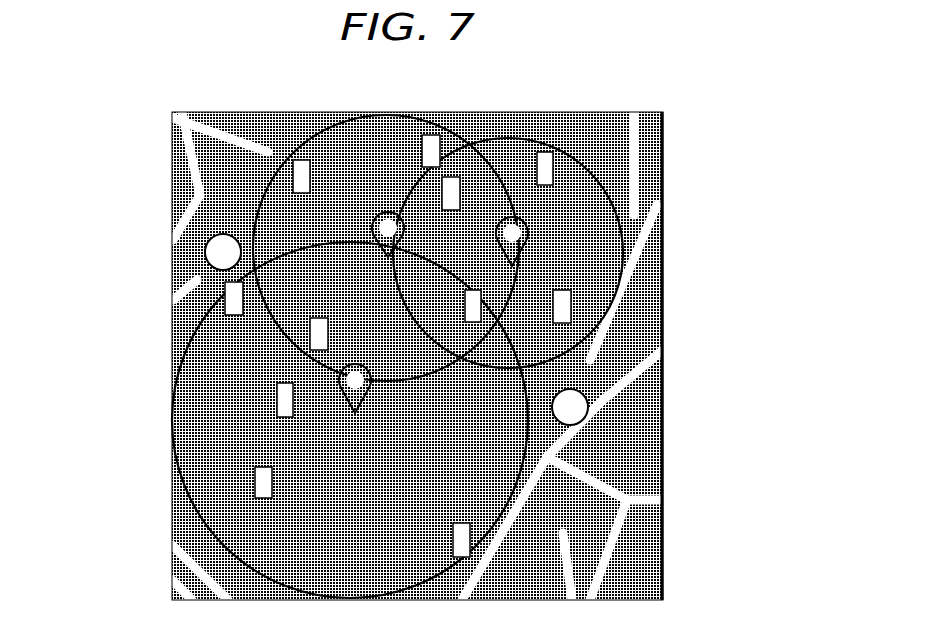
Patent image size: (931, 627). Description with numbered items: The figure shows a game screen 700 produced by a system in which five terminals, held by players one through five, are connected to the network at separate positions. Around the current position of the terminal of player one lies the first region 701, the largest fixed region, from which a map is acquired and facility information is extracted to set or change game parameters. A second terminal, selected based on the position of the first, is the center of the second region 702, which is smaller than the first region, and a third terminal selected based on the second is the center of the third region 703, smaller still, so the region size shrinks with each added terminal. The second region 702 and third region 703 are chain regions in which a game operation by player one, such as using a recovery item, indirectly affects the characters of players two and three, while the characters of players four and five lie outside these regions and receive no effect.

The map 700 is at (438, 336).
The first region 701 is at (304, 420).
The second region 702 is at (415, 222).
The third region 703 is at (568, 245).